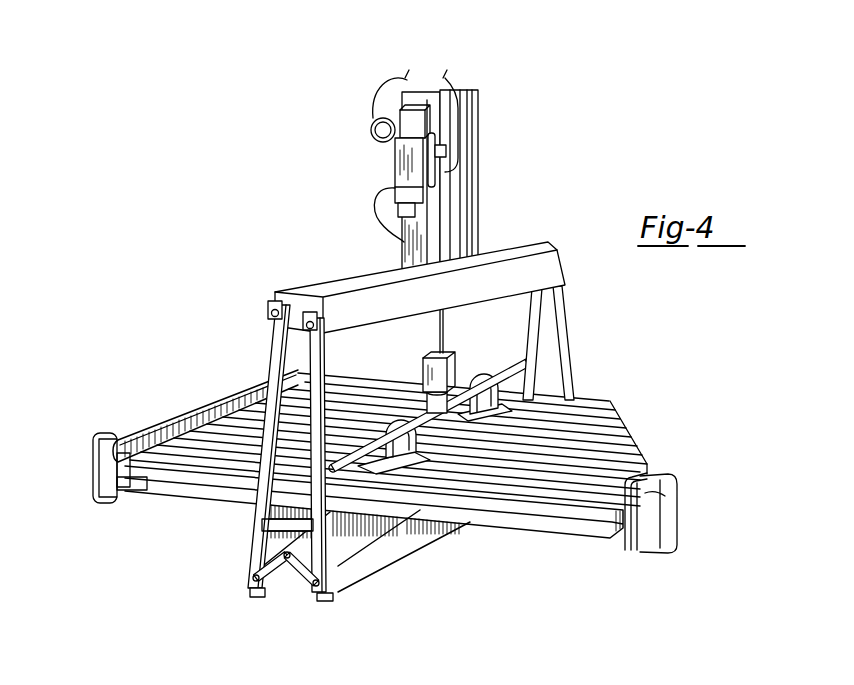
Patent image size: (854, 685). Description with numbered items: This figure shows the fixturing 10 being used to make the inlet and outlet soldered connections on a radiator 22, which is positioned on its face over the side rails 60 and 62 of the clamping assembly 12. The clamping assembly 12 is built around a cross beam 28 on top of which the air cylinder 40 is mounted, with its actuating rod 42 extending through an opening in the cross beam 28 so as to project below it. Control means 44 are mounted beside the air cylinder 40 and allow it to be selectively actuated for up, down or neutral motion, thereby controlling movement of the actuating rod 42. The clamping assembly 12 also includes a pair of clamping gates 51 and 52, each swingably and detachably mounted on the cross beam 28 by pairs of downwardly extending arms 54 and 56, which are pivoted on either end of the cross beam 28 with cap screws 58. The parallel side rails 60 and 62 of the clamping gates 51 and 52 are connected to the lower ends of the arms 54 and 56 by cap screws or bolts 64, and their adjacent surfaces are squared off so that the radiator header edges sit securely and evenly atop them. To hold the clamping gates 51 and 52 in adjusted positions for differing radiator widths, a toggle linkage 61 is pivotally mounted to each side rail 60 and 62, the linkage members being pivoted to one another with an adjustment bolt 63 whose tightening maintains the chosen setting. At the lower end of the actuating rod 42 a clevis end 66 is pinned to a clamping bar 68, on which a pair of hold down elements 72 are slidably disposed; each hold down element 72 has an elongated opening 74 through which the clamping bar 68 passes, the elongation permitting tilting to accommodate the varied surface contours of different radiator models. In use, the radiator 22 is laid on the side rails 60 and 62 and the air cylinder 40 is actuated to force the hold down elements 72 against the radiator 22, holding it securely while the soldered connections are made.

The fixturing 10 is at (312, 143).
The clamping assembly 12 is at (243, 291).
The radiator 22 is at (545, 512).
The cross beam 28 is at (341, 283).
The air cylinder 40 is at (470, 223).
The actuating rod 42 is at (446, 325).
The control means 44 is at (366, 175).
The clamping gate 51 is at (328, 352).
The clamping gate 52 is at (248, 339).
The arms 54 is at (575, 340).
The arms 56 is at (230, 443).
The cap screws 58 is at (270, 312).
The side rail 60 is at (398, 548).
The toggle linkage 61 is at (270, 567).
The side rail 62 is at (278, 526).
The adjustment bolt 63 is at (288, 562).
The cap screws or bolts 64 is at (257, 600).
The clevis end 66 is at (422, 365).
The clamping bar 68 is at (465, 387).
The hold down elements 72 is at (395, 415).
The elongated opening 74 is at (482, 374).